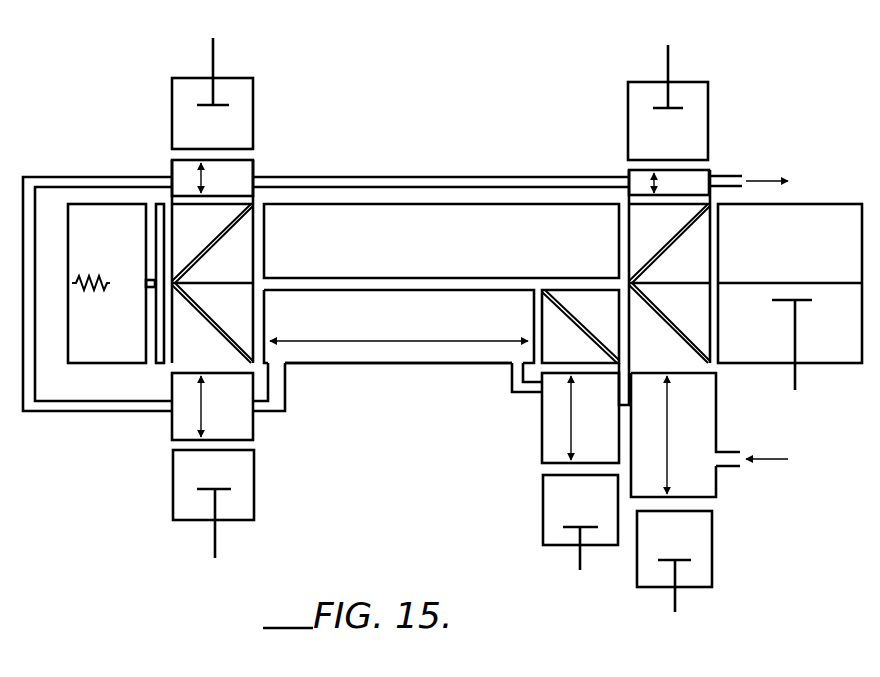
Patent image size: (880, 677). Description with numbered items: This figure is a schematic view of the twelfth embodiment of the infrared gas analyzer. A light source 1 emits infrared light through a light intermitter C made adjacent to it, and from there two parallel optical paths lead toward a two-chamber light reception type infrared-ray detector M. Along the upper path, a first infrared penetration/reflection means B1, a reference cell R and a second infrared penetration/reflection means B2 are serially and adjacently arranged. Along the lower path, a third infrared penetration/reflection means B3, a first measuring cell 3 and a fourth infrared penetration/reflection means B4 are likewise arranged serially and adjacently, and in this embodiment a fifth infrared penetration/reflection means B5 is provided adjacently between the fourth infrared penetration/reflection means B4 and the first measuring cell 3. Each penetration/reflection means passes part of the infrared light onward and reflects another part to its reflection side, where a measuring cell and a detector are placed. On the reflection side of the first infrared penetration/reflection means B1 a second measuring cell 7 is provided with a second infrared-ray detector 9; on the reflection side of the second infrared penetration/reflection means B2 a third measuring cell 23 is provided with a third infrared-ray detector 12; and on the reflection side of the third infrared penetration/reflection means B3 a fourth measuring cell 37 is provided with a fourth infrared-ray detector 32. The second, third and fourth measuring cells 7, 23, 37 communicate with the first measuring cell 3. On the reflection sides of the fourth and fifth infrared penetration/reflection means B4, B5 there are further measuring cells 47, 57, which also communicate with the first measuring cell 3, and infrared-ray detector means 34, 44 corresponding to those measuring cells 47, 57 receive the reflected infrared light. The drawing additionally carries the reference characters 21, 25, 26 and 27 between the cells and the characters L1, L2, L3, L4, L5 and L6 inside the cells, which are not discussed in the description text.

The light source 1 is at (106, 365).
The light intermitter C is at (159, 365).
The first measuring cell 3 is at (410, 366).
The second measuring cell 7 is at (254, 172).
The second infrared-ray detector 9 is at (255, 104).
The third infrared-ray detector 12 is at (709, 105).
The connecting passage 21 is at (288, 395).
The third measuring cell 23 is at (710, 172).
The return conduit 25 is at (85, 413).
The reference conduit 26 is at (427, 177).
The connecting passage 27 is at (510, 392).
The fourth infrared-ray detector 32 is at (173, 502).
The infrared-ray detector means 34 is at (713, 550).
The fourth measuring cell 37 is at (254, 430).
The infrared-ray detector means 44 is at (543, 520).
The measuring cell 47 is at (718, 410).
The measuring cell 57 is at (542, 445).
The first infrared penetration/reflection means B1 is at (235, 224).
The second infrared penetration/reflection means B2 is at (692, 224).
The third infrared penetration/reflection means B3 is at (235, 342).
The fourth infrared penetration/reflection means B4 is at (693, 342).
The fifth infrared penetration/reflection means B5 is at (553, 300).
The reference cell R is at (429, 248).
The two-chamber light reception type infrared-ray detector M is at (826, 204).
The path length L1 is at (399, 326).
The path length L2 is at (215, 178).
The path length L3 is at (666, 183).
The path length L4 is at (218, 406).
The path length L5 is at (686, 435).
The path length L6 is at (587, 418).